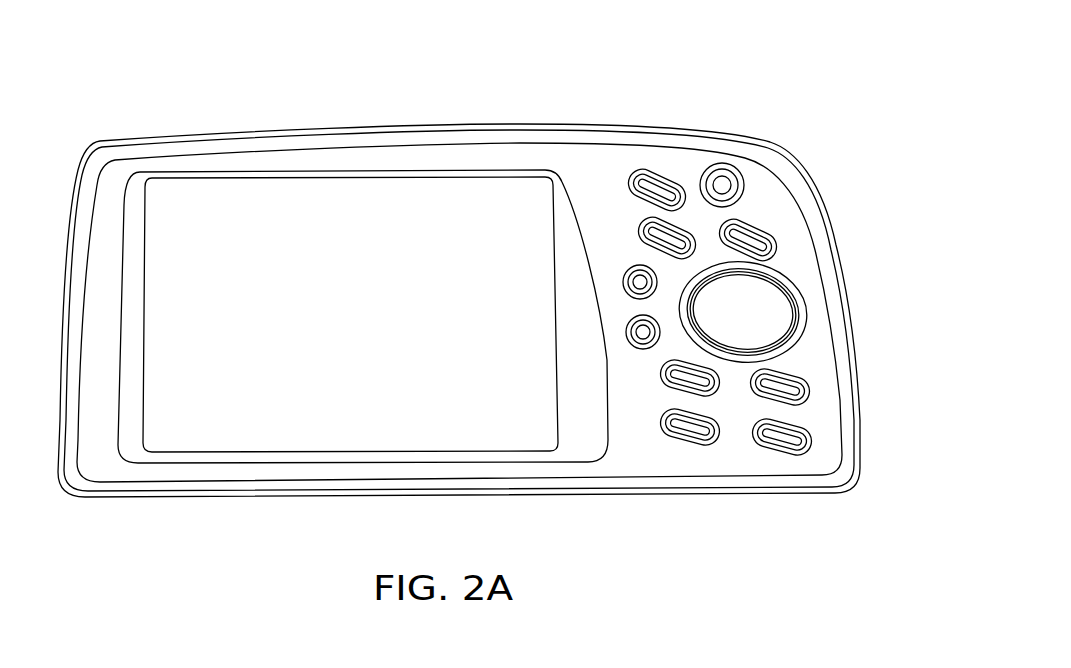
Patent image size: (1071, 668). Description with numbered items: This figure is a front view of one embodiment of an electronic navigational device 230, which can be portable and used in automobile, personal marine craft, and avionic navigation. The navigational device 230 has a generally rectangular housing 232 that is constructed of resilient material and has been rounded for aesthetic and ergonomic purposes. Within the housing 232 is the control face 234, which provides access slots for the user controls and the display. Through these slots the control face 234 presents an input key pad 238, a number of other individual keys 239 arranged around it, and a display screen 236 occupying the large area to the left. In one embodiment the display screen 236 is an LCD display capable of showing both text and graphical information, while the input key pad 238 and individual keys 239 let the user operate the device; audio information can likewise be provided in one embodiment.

The electronic navigational device 230 is at (662, 76).
The housing 232 is at (298, 127).
The control face 234 is at (420, 153).
The display screen 236 is at (232, 438).
The input key pad 238 is at (778, 318).
The individual keys 239 is at (750, 243).